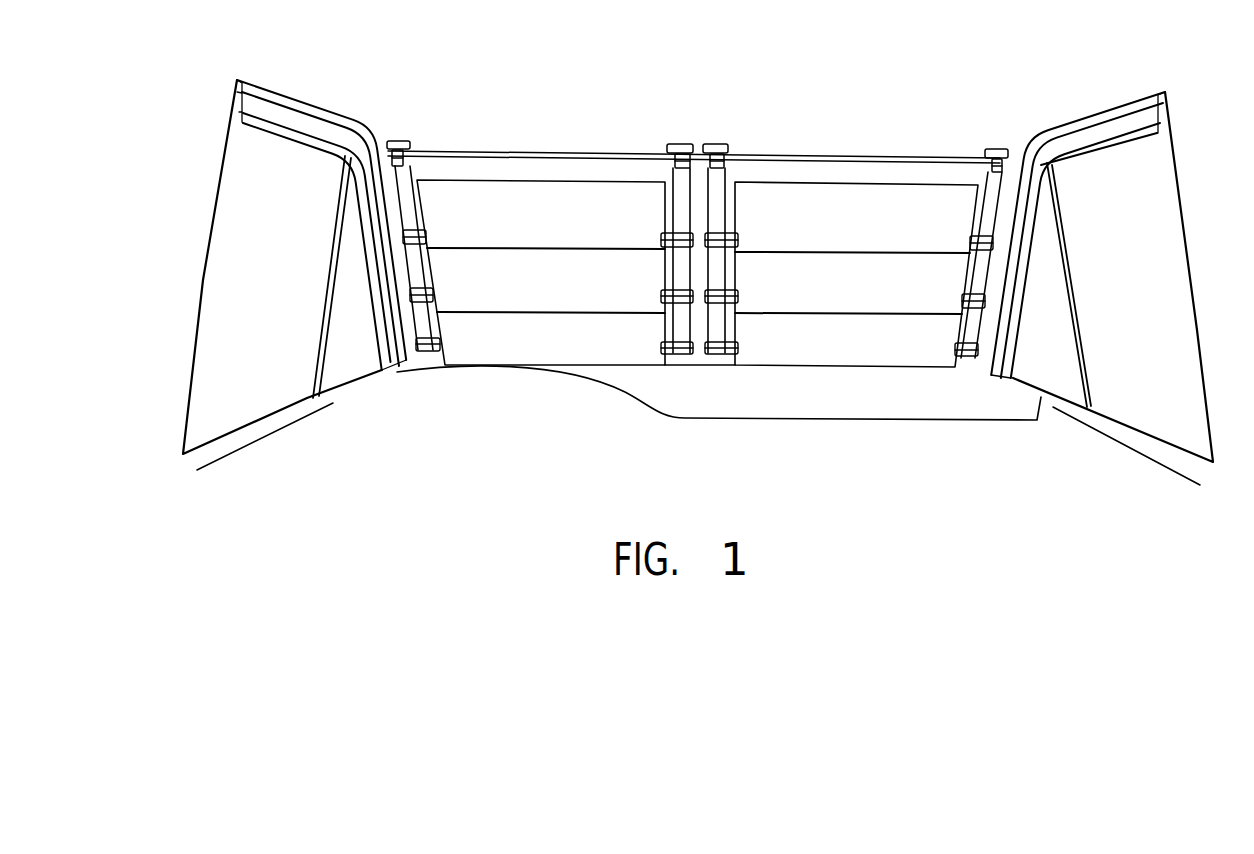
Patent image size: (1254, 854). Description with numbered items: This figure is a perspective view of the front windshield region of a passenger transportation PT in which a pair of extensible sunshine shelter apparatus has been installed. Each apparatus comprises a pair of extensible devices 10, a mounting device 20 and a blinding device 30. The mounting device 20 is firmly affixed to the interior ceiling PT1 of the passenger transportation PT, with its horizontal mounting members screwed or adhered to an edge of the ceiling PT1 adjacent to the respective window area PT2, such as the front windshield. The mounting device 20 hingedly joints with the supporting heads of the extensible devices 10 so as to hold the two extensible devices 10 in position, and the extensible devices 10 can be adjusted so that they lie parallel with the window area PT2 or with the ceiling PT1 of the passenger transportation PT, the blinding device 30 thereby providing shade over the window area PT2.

The extensible device 10 is at (697, 192).
The mounting device 20 is at (419, 162).
The blinding device 30 is at (531, 204).
The passenger transportation PT is at (729, 454).
The interior ceiling PT1 is at (795, 142).
The window area PT2 is at (827, 175).